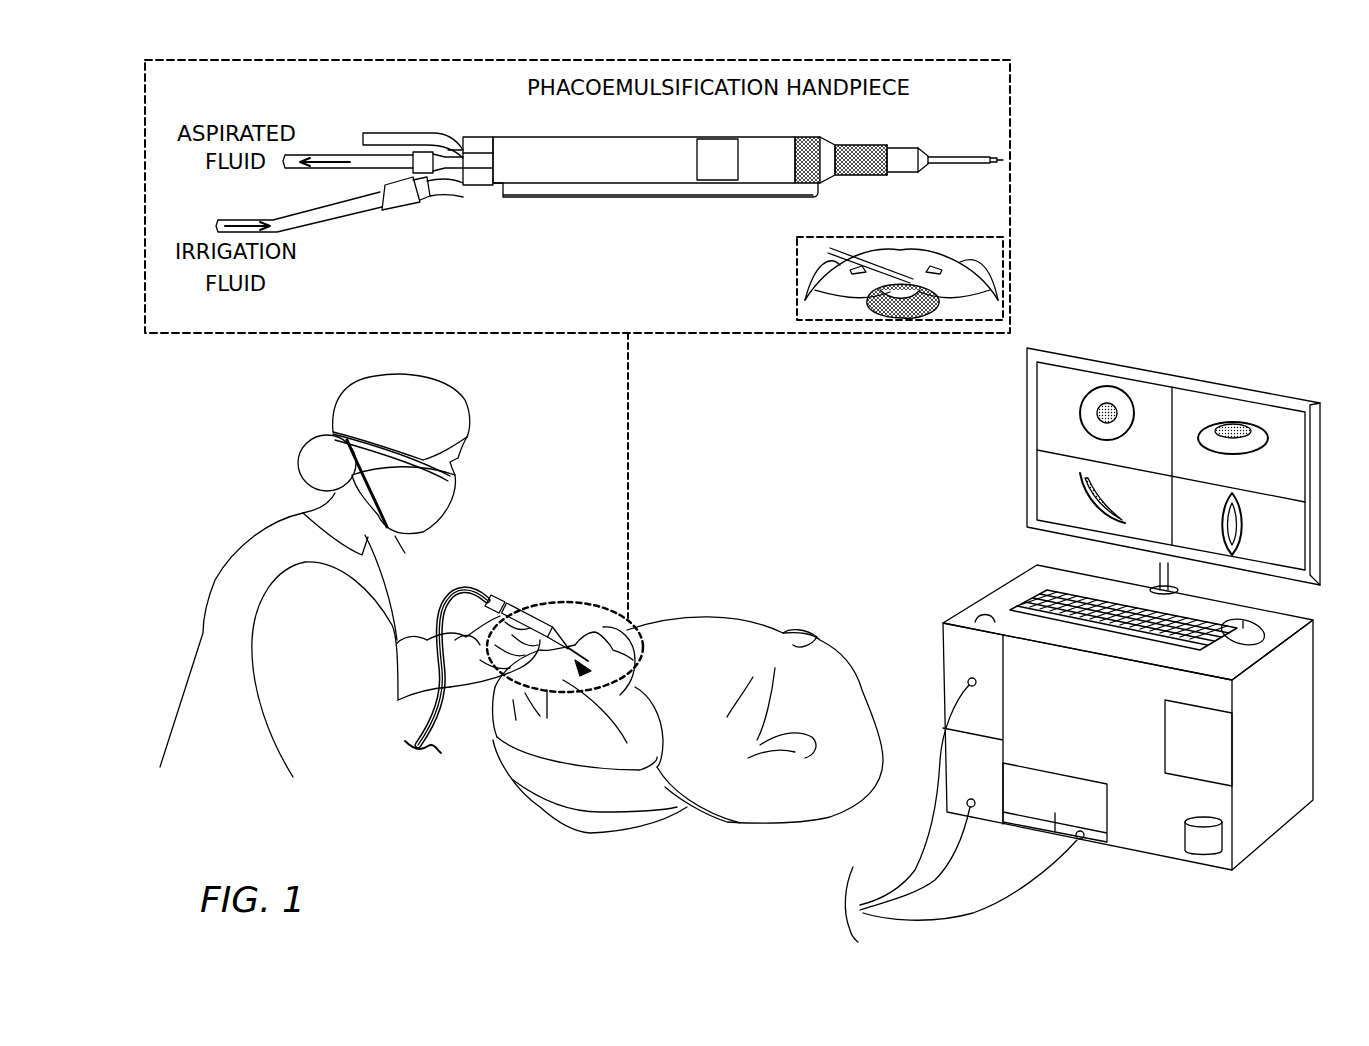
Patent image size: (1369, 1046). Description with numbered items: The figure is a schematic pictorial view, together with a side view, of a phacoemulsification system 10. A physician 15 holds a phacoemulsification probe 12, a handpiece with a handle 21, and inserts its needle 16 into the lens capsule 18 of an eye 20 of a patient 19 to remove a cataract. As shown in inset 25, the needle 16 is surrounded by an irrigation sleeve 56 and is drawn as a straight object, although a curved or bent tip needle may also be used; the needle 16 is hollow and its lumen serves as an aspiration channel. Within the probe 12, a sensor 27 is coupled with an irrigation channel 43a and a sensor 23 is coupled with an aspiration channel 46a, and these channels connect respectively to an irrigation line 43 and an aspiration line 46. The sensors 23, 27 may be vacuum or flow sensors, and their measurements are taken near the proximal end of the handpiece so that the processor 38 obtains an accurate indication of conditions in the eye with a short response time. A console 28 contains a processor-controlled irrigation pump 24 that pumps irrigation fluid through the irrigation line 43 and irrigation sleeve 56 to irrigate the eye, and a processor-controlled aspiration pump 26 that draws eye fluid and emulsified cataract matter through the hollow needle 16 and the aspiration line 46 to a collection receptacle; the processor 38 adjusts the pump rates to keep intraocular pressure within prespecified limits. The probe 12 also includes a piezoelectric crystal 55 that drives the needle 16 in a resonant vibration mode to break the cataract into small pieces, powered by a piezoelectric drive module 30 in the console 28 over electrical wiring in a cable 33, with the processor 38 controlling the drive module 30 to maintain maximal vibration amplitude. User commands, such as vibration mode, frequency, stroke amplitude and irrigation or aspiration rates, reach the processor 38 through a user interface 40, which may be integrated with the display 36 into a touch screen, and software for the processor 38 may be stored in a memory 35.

The phacoemulsification system 10 is at (1238, 290).
The phacoemulsification probe 12 is at (548, 590).
The physician 15 is at (330, 405).
The needle 16 is at (1003, 160).
The lens capsule 18 is at (873, 320).
The patient 19 is at (578, 755).
The eye 20 is at (985, 280).
The handle 21 is at (500, 598).
The sensor 23 is at (481, 159).
The irrigation pump 24 is at (973, 729).
The inset 25 is at (577, 196).
The aspiration pump 26 is at (971, 776).
The sensor 27 is at (481, 186).
The console 28 is at (1275, 820).
The piezoelectric drive module 30 is at (1055, 802).
The cable 33 is at (394, 131).
The memory 35 is at (1200, 858).
The display 36 is at (1027, 460).
The processor 38 is at (1198, 743).
The user interface 40 is at (992, 586).
The irrigation line 43 is at (330, 226).
The irrigation channel 43a is at (443, 200).
The aspiration line 46 is at (316, 152).
The aspiration channel 46a is at (452, 150).
The piezoelectric crystal 55 is at (717, 159).
The irrigation sleeve 56 is at (960, 157).